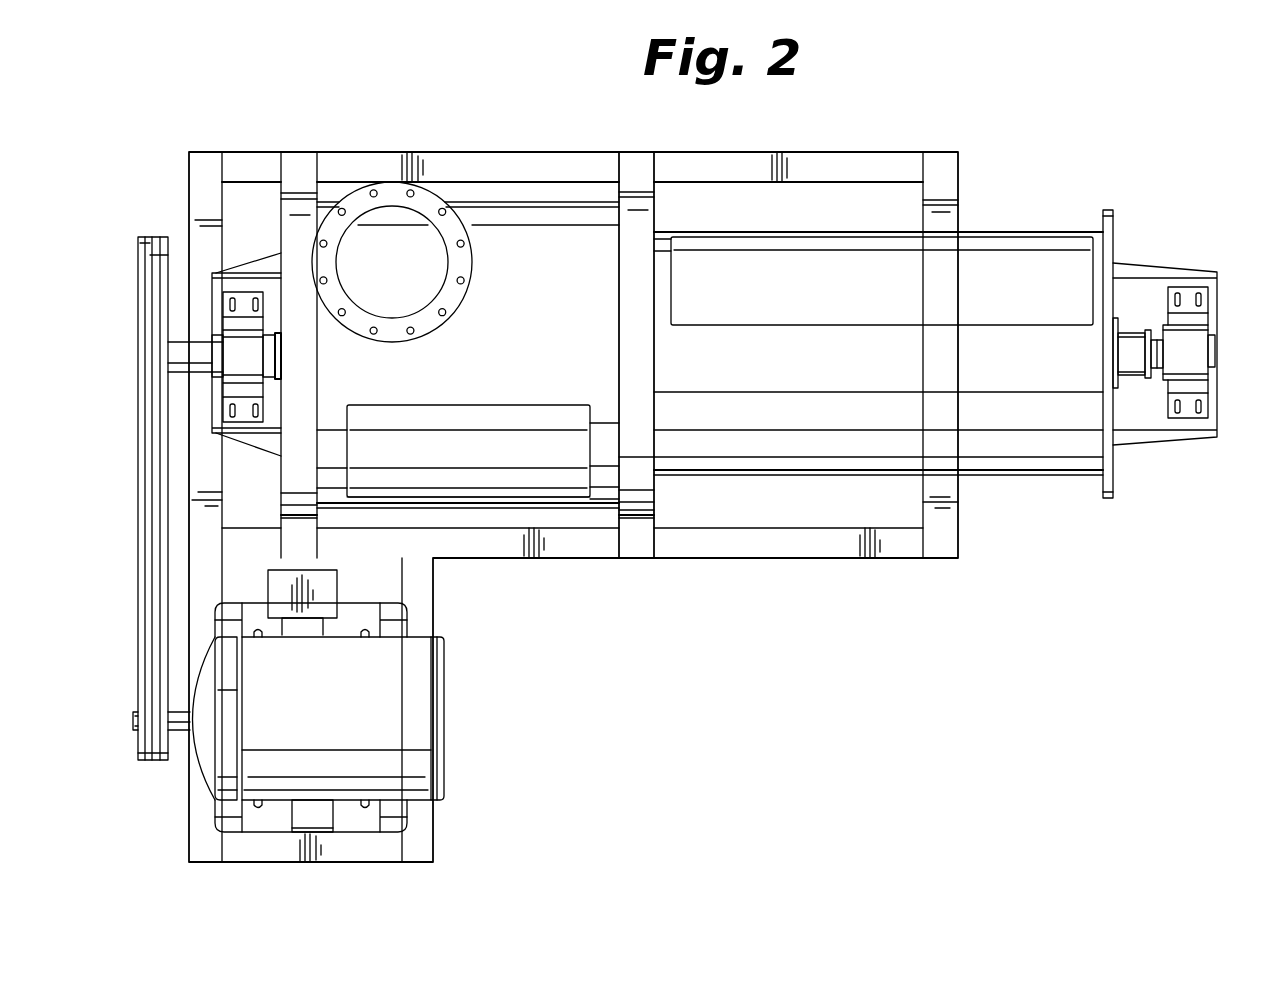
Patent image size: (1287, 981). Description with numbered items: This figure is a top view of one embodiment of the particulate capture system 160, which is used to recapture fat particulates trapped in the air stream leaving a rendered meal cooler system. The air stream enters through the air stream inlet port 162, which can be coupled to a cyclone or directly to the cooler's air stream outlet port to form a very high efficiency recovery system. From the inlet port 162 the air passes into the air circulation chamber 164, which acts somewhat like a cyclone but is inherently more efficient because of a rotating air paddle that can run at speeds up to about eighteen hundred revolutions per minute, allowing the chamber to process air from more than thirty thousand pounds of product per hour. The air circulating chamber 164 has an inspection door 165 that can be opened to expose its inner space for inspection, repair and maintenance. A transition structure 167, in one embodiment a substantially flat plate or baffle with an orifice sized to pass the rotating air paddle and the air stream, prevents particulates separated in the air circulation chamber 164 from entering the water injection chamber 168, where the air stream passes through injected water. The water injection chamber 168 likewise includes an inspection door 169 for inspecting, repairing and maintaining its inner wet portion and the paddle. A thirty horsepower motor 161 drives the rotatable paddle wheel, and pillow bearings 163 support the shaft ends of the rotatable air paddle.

The particulate capture system 160 is at (628, 583).
The motor 161 is at (444, 720).
The air stream inlet port 162 is at (425, 205).
The pillow bearings 163 is at (237, 323).
The air circulation chamber 164 is at (588, 507).
The inspection door 165 is at (400, 488).
The transition structure 167 is at (643, 537).
The water injection chamber 168 is at (1037, 473).
The inspection door 169 is at (700, 245).